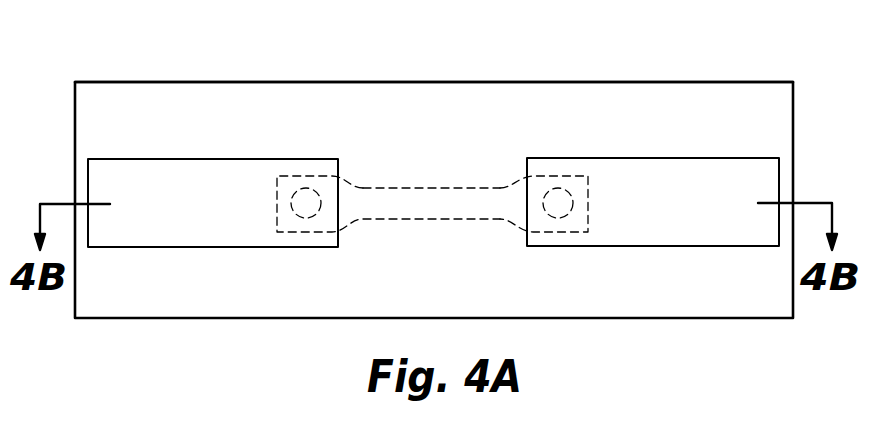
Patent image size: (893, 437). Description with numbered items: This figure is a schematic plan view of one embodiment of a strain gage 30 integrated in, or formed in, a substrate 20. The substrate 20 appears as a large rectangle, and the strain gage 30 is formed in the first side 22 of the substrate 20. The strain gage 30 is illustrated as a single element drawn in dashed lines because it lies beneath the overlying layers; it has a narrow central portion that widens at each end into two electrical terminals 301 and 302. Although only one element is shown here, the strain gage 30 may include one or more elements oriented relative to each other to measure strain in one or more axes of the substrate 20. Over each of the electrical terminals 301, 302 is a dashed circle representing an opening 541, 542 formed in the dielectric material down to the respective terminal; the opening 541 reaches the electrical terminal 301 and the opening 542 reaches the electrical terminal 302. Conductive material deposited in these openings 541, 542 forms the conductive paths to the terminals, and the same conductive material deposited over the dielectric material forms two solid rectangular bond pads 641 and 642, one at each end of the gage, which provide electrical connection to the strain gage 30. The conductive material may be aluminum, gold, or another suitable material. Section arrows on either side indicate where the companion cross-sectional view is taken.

The substrate 20 is at (602, 70).
The first side 22 is at (743, 93).
The strain gage 30 is at (456, 157).
The electrical terminal 301 is at (567, 182).
The electrical terminal 302 is at (300, 182).
The opening 541 is at (572, 210).
The opening 542 is at (302, 217).
The bond pad 641 is at (680, 185).
The bond pad 642 is at (176, 178).